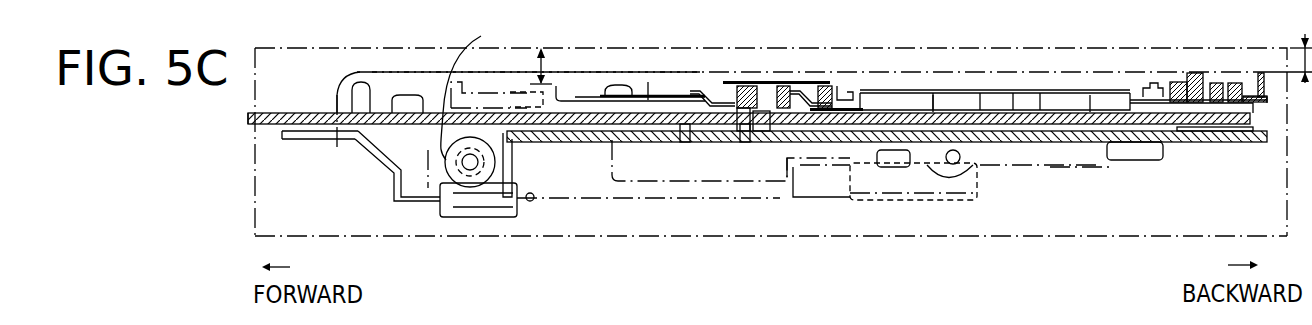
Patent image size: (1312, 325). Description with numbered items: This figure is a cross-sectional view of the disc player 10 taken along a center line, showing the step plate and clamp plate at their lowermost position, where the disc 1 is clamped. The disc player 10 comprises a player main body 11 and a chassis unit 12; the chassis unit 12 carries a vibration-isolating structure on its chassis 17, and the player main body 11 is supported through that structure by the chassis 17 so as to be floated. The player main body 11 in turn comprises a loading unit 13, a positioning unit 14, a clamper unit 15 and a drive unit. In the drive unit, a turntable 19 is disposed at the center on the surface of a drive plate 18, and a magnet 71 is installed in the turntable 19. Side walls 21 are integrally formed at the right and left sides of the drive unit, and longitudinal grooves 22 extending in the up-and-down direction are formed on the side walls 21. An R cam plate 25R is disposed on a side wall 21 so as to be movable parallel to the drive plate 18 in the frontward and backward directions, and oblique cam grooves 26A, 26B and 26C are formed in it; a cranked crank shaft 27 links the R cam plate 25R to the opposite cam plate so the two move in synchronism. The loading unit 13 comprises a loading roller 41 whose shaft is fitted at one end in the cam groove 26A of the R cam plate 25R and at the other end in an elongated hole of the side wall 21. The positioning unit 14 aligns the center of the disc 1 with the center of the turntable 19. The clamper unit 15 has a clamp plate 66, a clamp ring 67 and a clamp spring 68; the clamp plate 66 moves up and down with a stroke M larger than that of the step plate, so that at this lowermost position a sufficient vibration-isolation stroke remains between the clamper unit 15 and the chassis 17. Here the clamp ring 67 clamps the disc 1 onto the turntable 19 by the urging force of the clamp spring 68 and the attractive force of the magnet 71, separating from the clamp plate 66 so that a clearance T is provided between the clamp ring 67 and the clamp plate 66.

The disc player 10 is at (291, 45).
The disc 1 is at (254, 128).
The chassis unit 12 is at (255, 181).
The chassis 17 is at (256, 222).
The R cam plate 25R is at (375, 72).
The loading roller 41 is at (492, 87).
The stroke M is at (538, 67).
The clamp plate 66 is at (569, 97).
The cam groove 26C is at (618, 85).
The longitudinal grooves 22 is at (648, 82).
The clamper unit 15 is at (678, 74).
The clamp spring 68 is at (747, 85).
The clamp ring 67 is at (820, 87).
The clearance T is at (842, 88).
The player main body 11 is at (951, 69).
The side walls 21 is at (981, 110).
The positioning unit 14 is at (1013, 85).
The drive plate 18 is at (1205, 143).
The crank shaft 27 is at (413, 173).
The cam groove 26A is at (428, 188).
The loading unit 13 is at (497, 163).
The turntable 19 is at (612, 140).
The magnet 71 is at (773, 142).
The cam groove 26B is at (873, 107).